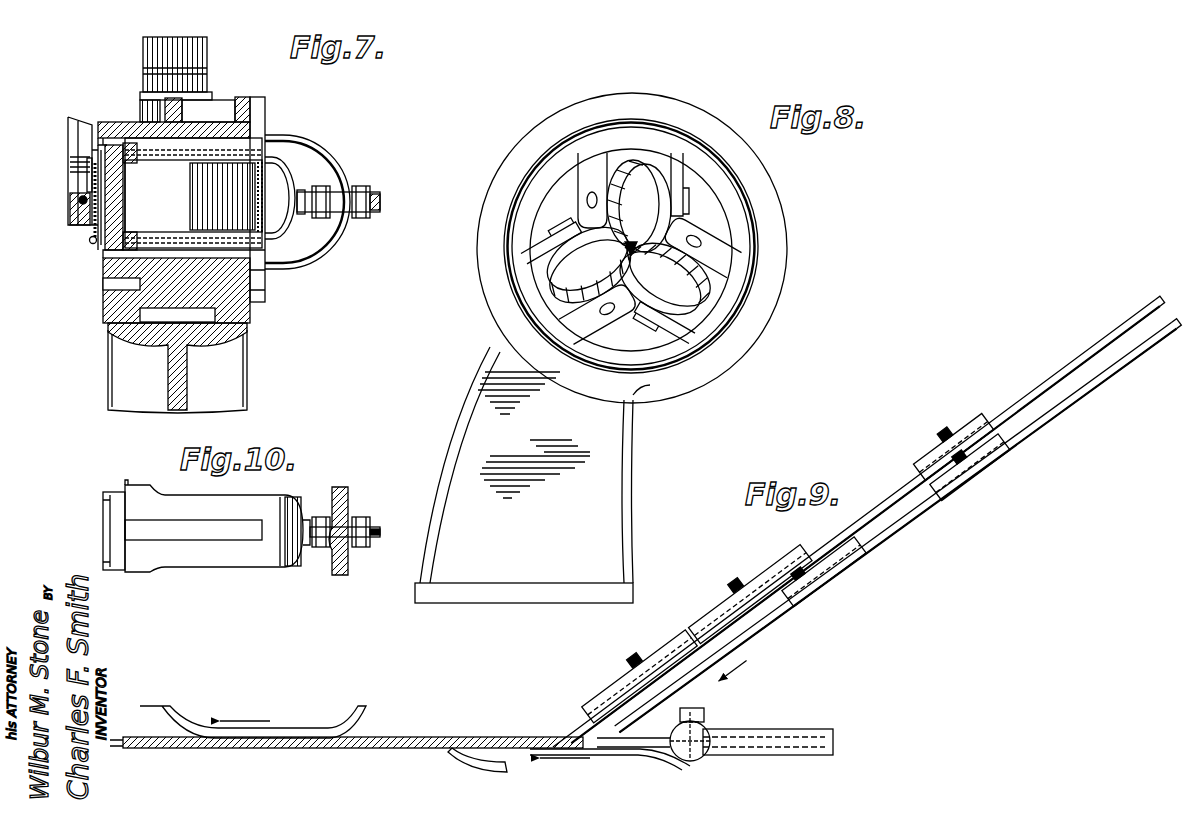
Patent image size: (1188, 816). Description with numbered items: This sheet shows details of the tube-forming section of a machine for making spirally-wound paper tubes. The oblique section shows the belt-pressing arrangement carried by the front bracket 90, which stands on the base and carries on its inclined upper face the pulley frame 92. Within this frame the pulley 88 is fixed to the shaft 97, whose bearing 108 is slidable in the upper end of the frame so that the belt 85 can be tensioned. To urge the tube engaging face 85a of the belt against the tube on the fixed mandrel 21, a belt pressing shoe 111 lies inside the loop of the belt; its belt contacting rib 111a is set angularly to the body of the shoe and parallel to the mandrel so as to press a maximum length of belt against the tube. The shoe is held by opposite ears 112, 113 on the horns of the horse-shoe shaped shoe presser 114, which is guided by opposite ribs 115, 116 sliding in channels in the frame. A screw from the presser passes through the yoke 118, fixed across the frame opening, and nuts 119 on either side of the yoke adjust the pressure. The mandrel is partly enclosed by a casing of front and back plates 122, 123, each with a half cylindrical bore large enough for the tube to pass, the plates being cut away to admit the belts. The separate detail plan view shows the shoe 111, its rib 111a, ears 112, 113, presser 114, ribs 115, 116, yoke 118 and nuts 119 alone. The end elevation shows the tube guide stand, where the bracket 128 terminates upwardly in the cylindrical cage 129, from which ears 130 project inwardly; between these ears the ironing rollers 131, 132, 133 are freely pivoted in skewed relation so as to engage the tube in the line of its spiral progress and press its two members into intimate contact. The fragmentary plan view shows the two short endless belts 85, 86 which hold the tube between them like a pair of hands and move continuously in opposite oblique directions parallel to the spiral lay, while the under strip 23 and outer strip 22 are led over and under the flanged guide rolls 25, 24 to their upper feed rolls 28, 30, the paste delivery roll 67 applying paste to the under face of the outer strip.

In FIG. 7, the mandrel 21 is at (79, 198).
In FIG. 8, the mandrel 21 is at (640, 240).
In FIG. 9, the mandrel 21 is at (672, 746).
In FIG. 9, the strip 22 is at (893, 491).
In FIG. 9, the strip 23 is at (910, 511).
In FIG. 9, the flanged guide roll 24 is at (963, 427).
In FIG. 9, the flanged guide roll 25 is at (996, 458).
In FIG. 9, the upper feed roll 28 is at (862, 559).
In FIG. 9, the upper feed roll 30 is at (760, 570).
In FIG. 9, the paste delivery roll 67 is at (610, 689).
In FIG. 7, the endless belt 85 is at (265, 180).
In FIG. 9, the endless belt 85 is at (690, 755).
In FIG. 7, the tube engaging face 85a is at (78, 176).
In FIG. 9, the endless belt 86 is at (366, 713).
In FIG. 7, the pulley 88 is at (80, 152).
In FIG. 7, the bracket 90 is at (228, 383).
In FIG. 7, the pulley frame 92 is at (140, 325).
In FIG. 7, the shaft 97 is at (172, 37).
In FIG. 9, the bearing 108 is at (770, 729).
In FIG. 7, the belt pressing shoe 111 is at (108, 245).
In FIG. 10, the belt pressing shoe 111 is at (115, 570).
In FIG. 7, the belt contacting rib 111a is at (120, 200).
In FIG. 10, the belt contacting rib 111a is at (103, 515).
In FIG. 10, the ear 112 is at (128, 482).
In FIG. 10, the ear 113 is at (138, 575).
In FIG. 7, the shoe presser 114 is at (292, 238).
In FIG. 10, the shoe presser 114 is at (285, 556).
In FIG. 7, the rib 115 is at (267, 138).
In FIG. 10, the rib 115 is at (242, 527).
In FIG. 7, the rib 116 is at (275, 266).
In FIG. 7, the yoke 118 is at (350, 167).
In FIG. 10, the yoke 118 is at (348, 494).
In FIG. 7, the nut 119 is at (350, 218).
In FIG. 10, the nut 119 is at (350, 548).
In FIG. 7, the front plate 122 is at (90, 241).
In FIG. 7, the back plate 123 is at (70, 209).
In FIG. 8, the bracket 128 is at (612, 480).
In FIG. 8, the cylindrical cage 129 is at (740, 219).
In FIG. 8, the ear 130 is at (547, 245).
In FIG. 8, the ironing roller 131 is at (705, 325).
In FIG. 8, the ironing roller 132 is at (530, 272).
In FIG. 8, the ironing roller 133 is at (648, 170).